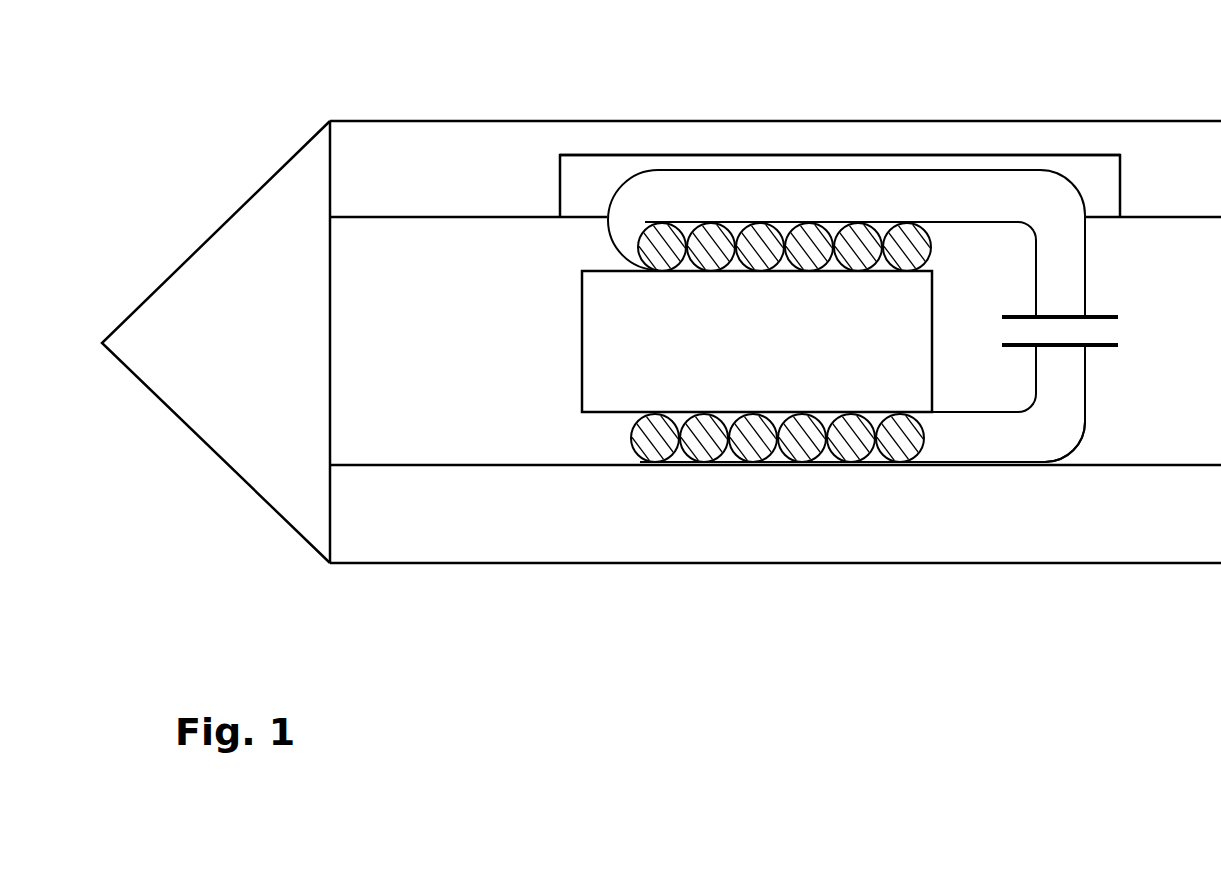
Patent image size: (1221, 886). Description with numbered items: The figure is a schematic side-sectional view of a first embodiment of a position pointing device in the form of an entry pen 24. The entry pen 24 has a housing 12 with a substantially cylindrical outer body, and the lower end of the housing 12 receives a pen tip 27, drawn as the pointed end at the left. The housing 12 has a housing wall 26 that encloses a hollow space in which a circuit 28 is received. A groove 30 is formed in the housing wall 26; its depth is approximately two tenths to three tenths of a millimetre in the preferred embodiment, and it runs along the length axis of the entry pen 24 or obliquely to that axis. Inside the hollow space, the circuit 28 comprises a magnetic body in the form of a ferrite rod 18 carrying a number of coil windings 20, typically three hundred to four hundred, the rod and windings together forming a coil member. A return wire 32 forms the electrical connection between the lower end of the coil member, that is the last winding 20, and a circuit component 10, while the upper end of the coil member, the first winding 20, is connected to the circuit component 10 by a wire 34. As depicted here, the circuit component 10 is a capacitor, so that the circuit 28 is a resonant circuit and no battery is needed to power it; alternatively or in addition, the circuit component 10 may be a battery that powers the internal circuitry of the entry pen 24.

The circuit component 10 is at (1110, 348).
The housing 12 is at (703, 120).
The ferrite rod 18 is at (582, 340).
The coil windings 20 is at (632, 436).
The entry pen 24 is at (1015, 78).
The housing wall 26 is at (403, 143).
The pen tip 27 is at (218, 455).
The circuit 28 is at (1114, 298).
The groove 30 is at (1095, 172).
The return wire 32 is at (880, 170).
The wire 34 is at (1086, 424).